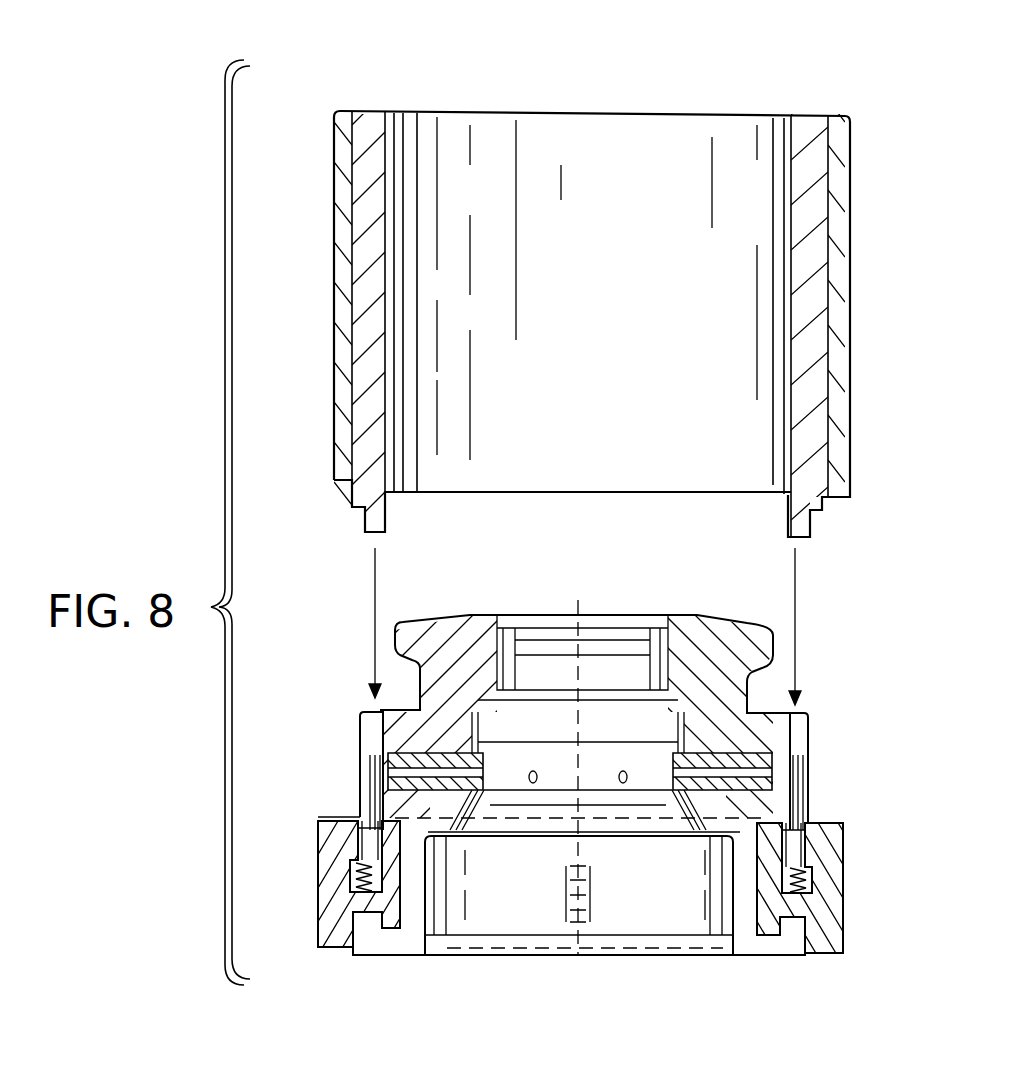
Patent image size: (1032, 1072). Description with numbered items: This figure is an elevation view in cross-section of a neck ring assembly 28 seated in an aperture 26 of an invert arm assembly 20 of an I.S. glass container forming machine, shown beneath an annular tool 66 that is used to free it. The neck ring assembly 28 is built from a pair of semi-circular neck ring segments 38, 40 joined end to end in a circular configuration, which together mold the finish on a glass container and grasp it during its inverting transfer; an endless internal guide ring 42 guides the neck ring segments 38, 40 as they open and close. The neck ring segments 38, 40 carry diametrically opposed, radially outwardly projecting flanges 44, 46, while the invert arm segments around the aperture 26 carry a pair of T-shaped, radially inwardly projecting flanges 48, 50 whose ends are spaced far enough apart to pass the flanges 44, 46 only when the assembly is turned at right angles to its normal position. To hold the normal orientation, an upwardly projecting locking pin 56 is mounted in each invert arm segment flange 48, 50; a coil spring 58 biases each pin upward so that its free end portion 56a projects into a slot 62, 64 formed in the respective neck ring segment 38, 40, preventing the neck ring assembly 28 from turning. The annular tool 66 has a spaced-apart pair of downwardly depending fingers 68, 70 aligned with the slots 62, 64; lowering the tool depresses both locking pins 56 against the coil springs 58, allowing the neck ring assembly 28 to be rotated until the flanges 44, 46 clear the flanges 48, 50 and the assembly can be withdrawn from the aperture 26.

The invert arm assembly 20 is at (865, 850).
The aperture 26 is at (437, 958).
The neck ring assembly 28 is at (608, 598).
The neck ring segment 38 is at (438, 635).
The neck ring segment 40 is at (722, 635).
The guide ring 42 is at (748, 752).
The neck ring segment flange 44 is at (380, 958).
The neck ring segment flange 46 is at (767, 958).
The invert arm segment flange 48 is at (318, 906).
The invert arm segment flange 50 is at (845, 890).
The locking pin 56 is at (358, 860).
The free end portion 56a is at (365, 818).
The coil spring 58 is at (352, 878).
The slot 62 is at (372, 735).
The slot 64 is at (810, 722).
The annular tool 66 is at (852, 160).
The finger 68 is at (362, 515).
The finger 70 is at (812, 537).